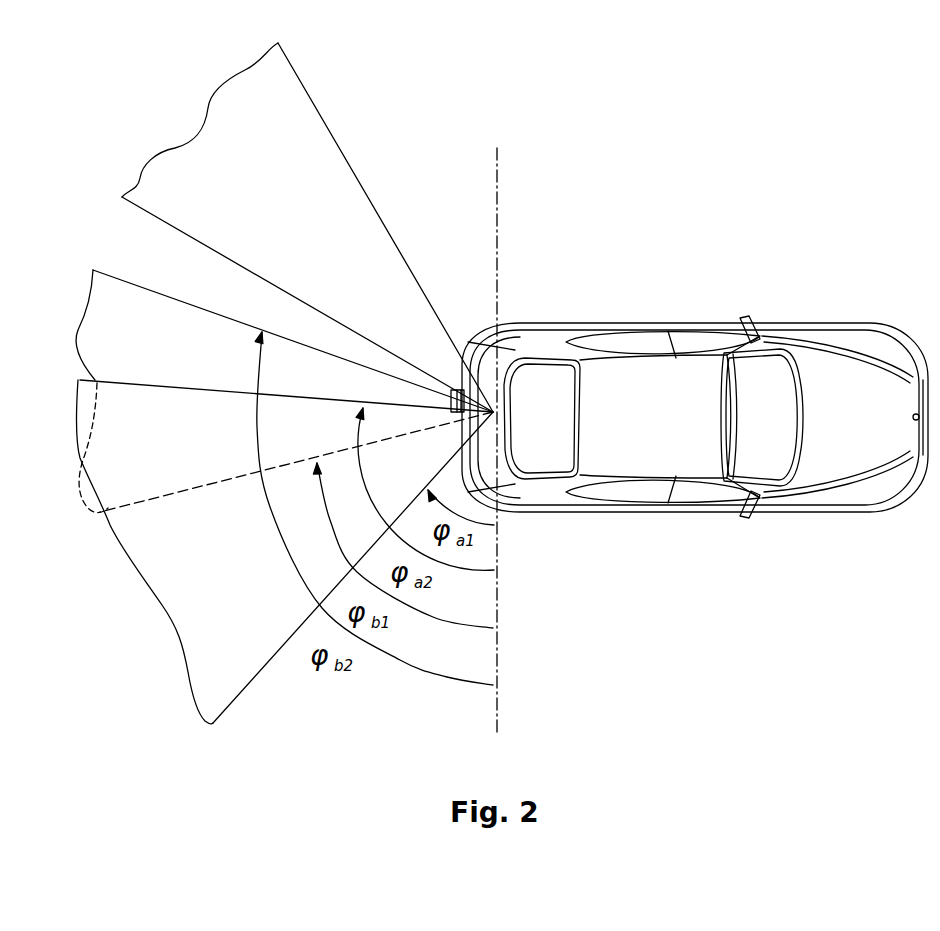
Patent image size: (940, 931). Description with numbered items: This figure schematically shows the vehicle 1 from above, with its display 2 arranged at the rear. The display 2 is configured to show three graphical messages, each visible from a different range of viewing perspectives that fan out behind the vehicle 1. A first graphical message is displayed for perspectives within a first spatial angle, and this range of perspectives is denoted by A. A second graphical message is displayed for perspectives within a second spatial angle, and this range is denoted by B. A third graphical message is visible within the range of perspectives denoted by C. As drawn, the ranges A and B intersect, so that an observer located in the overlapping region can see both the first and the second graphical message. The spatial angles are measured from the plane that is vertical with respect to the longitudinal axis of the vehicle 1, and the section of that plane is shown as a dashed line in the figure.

The vehicle 1 is at (721, 290).
The display 2 is at (468, 358).
The range of perspectives for the first graphical message A is at (284, 552).
The range of perspectives for the second graphical message B is at (284, 341).
The range of perspectives for the third graphical message C is at (307, 227).